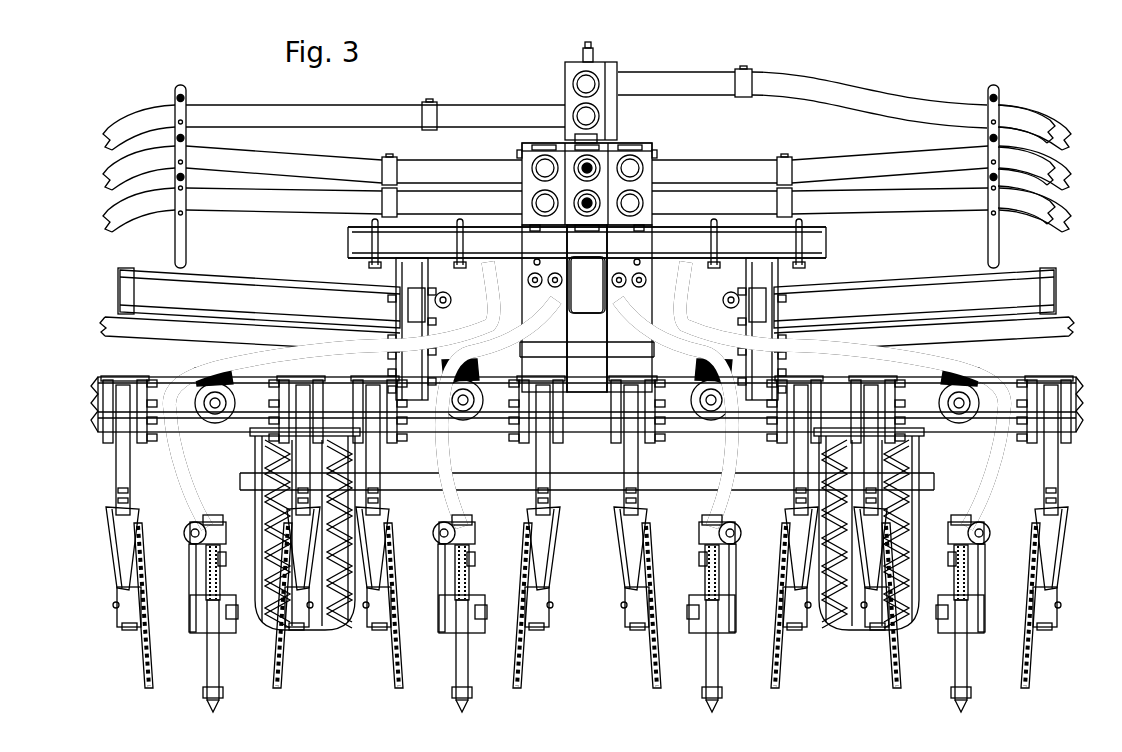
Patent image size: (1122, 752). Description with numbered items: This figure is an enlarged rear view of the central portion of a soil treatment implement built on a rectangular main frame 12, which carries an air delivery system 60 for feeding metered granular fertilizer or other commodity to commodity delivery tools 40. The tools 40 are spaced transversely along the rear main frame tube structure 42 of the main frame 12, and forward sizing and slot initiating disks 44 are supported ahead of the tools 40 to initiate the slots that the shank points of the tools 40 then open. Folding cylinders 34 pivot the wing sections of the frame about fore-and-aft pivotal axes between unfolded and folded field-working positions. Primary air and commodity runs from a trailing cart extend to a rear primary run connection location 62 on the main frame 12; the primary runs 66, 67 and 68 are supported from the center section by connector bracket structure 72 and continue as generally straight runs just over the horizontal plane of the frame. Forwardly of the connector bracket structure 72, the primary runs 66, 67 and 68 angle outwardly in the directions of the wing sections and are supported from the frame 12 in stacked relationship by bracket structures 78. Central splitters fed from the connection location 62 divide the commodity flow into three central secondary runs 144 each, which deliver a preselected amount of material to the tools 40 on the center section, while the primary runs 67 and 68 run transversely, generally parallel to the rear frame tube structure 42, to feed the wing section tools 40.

The main frame 12 is at (1090, 330).
The folding cylinder 34 is at (328, 287).
The commodity delivery tools 40 is at (170, 668).
The rear main frame tube structure 42 is at (106, 377).
The sizing and slot initiating disks 44 is at (458, 702).
The air delivery system 60 is at (528, 93).
The rear primary run connection location 62 is at (625, 63).
The primary run 66 is at (277, 203).
The primary run 67 is at (428, 168).
The primary run 68 is at (390, 104).
The connector bracket structure 72 is at (565, 70).
The bracket structures 78 is at (180, 86).
The central secondary runs 144 is at (345, 393).